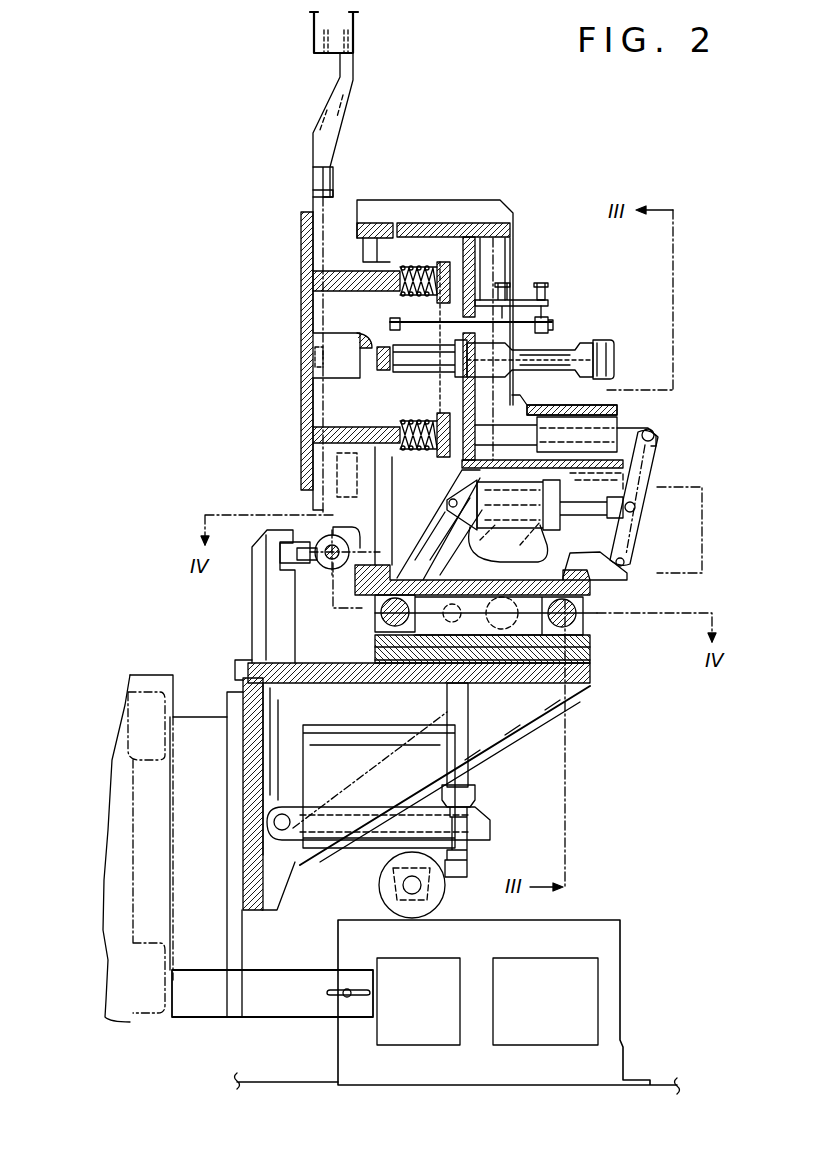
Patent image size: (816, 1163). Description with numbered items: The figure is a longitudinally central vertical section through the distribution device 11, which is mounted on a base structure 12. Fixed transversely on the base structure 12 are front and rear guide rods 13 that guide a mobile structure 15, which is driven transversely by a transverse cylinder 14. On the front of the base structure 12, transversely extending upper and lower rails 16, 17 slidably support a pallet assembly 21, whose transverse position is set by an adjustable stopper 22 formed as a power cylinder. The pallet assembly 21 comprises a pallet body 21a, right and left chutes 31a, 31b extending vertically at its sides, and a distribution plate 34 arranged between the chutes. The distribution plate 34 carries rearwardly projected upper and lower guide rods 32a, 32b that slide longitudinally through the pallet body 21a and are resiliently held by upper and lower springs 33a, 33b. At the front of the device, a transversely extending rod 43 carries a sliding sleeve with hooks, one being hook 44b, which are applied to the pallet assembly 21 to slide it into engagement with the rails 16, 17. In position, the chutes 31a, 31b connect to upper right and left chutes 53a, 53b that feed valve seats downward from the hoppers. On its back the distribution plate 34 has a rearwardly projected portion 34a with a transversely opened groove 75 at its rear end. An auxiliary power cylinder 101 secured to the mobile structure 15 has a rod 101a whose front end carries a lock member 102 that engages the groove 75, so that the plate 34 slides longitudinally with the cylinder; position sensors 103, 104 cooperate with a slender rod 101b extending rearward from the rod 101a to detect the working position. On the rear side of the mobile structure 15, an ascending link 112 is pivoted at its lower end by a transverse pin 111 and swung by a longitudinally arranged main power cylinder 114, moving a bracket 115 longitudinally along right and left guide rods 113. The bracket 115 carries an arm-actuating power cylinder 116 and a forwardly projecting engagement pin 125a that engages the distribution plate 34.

The distribution device 11 is at (508, 187).
The base structure 12 is at (613, 656).
The guide rods 13 is at (380, 612).
The transverse cylinder 14 is at (372, 643).
The mobile structure 15 is at (587, 527).
The upper rail 16 is at (378, 222).
The lower rail 17 is at (355, 576).
The pallet assembly 21 is at (298, 152).
The pallet body 21a is at (380, 200).
The right stopper 22 is at (536, 688).
The right chute 31a is at (381, 125).
The left chute 31b is at (348, 102).
The upper guide rod 32a is at (392, 262).
The lower guide rod 32b is at (380, 446).
The upper spring 33a is at (414, 266).
The lower spring 33b is at (423, 448).
The distribution plate 34 is at (298, 295).
The rearwardly projected portion 34a is at (337, 347).
The rod 43 is at (327, 547).
The hook 44b is at (330, 530).
The upper right chute 53a is at (381, 32).
The upper left chute 53b is at (358, 24).
The transversely opened groove 75 is at (363, 366).
The auxiliary power cylinder 101 is at (553, 358).
The rod 101a is at (441, 378).
The slender rod 101b is at (522, 318).
The lock member 102 is at (392, 372).
The position sensor 103 is at (507, 290).
The position sensor 104 is at (546, 290).
The transverse pin 111 is at (624, 564).
The ascending link 112 is at (640, 476).
The longitudinal guide rods 113 is at (540, 431).
The main power cylinder 114 is at (600, 578).
The bracket 115 is at (617, 404).
The arm-actuating power cylinder 116 is at (605, 340).
The right engagement pin 125a is at (438, 335).